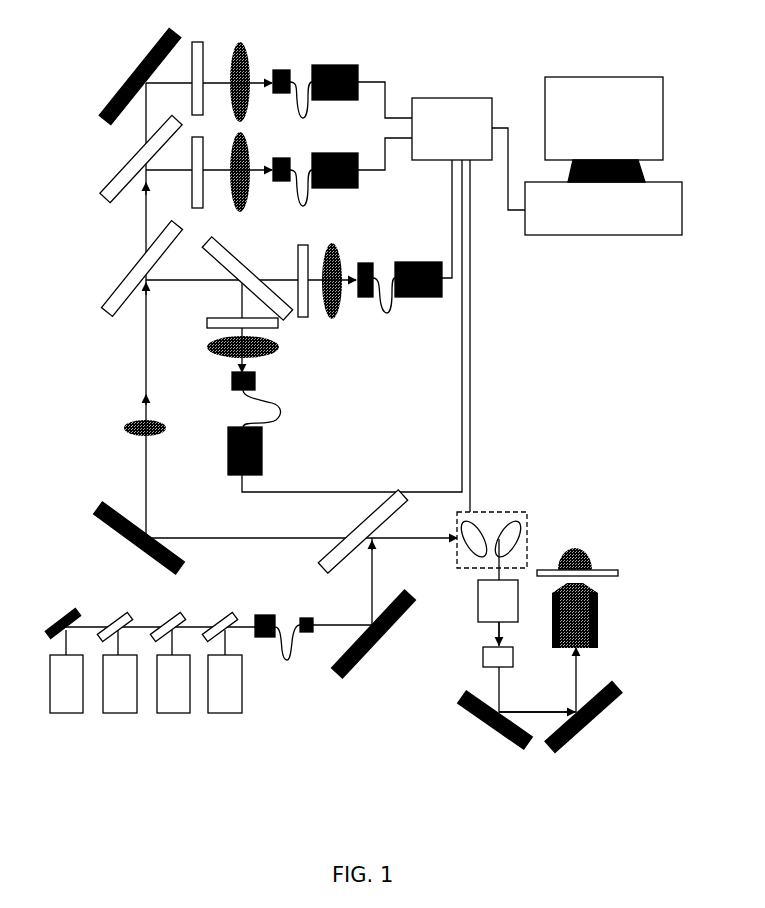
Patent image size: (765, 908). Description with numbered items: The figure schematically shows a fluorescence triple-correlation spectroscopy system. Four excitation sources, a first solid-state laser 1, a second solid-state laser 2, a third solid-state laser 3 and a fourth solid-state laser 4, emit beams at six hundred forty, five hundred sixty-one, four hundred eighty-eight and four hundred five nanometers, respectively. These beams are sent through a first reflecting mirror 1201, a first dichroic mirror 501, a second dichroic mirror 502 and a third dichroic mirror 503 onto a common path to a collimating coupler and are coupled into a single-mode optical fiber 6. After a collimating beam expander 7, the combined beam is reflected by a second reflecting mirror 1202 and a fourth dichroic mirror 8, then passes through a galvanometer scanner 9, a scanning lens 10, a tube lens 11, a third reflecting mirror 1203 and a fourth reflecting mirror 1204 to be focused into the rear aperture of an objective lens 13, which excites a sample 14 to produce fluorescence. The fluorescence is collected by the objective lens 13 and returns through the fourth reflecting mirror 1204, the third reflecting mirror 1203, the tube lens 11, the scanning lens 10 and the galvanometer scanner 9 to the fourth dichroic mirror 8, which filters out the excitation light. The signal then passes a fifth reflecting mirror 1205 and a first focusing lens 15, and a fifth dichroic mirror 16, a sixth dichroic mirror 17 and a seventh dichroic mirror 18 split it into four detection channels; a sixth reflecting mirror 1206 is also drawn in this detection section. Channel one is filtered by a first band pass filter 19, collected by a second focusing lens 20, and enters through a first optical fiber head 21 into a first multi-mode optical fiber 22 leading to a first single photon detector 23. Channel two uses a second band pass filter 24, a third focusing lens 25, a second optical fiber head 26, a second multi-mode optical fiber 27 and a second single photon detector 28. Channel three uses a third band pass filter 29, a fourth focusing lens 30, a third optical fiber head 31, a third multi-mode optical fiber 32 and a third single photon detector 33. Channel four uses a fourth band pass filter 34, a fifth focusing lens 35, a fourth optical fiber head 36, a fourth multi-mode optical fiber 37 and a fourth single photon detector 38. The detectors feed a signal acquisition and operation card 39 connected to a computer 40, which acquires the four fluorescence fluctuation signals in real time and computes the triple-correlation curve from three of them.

The first solid-state laser 1 is at (73, 700).
The second solid-state laser 2 is at (126, 700).
The third solid-state laser 3 is at (179, 700).
The fourth solid-state laser 4 is at (229, 700).
The single-mode optical fiber 6 is at (290, 657).
The collimating beam expander 7 is at (307, 636).
The fourth dichroic mirror 8 is at (345, 553).
The galvanometer scanner 9 is at (459, 513).
The scanning lens 10 is at (490, 601).
The tube lens 11 is at (492, 657).
The objective lens 13 is at (598, 624).
The sample 14 is at (576, 560).
The first focusing lens 15 is at (122, 429).
The fifth dichroic mirror 16 is at (122, 300).
The sixth dichroic mirror 17 is at (253, 277).
The seventh dichroic mirror 18 is at (128, 181).
The first band pass filter 19 is at (222, 323).
The second focusing lens 20 is at (218, 347).
The first optical fiber head 21 is at (232, 381).
The first multi-mode optical fiber 22 is at (240, 399).
The first single photon detector 23 is at (228, 450).
The second band pass filter 24 is at (305, 258).
The third focusing lens 25 is at (333, 256).
The second optical fiber head 26 is at (365, 263).
The second multi-mode optical fiber 27 is at (393, 295).
The second single photon detector 28 is at (418, 262).
The third band pass filter 29 is at (197, 200).
The fourth focusing lens 30 is at (240, 210).
The third optical fiber head 31 is at (283, 158).
The third multi-mode optical fiber 32 is at (309, 183).
The third single photon detector 33 is at (333, 156).
The fourth band pass filter 34 is at (196, 62).
The fifth focusing lens 35 is at (240, 44).
The fourth optical fiber head 36 is at (283, 70).
The fourth multi-mode optical fiber 37 is at (310, 95).
The fourth single photon detector 38 is at (333, 68).
The signal acquisition and operation card 39 is at (447, 130).
The computer 40 is at (592, 214).
The first dichroic mirror 501 is at (110, 617).
The second dichroic mirror 502 is at (163, 617).
The third dichroic mirror 503 is at (215, 617).
The first reflecting mirror 1201 is at (67, 614).
The second reflecting mirror 1202 is at (372, 652).
The third reflecting mirror 1203 is at (492, 725).
The fourth reflecting mirror 1204 is at (590, 723).
The fifth reflecting mirror 1205 is at (121, 536).
The sixth reflecting mirror 1206 is at (126, 74).